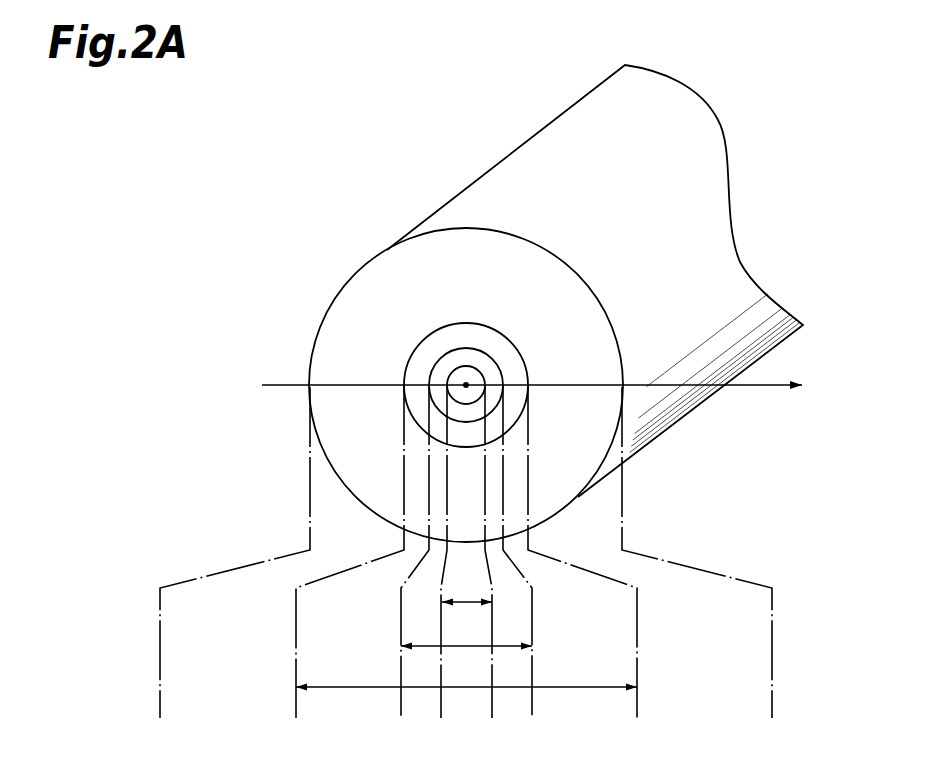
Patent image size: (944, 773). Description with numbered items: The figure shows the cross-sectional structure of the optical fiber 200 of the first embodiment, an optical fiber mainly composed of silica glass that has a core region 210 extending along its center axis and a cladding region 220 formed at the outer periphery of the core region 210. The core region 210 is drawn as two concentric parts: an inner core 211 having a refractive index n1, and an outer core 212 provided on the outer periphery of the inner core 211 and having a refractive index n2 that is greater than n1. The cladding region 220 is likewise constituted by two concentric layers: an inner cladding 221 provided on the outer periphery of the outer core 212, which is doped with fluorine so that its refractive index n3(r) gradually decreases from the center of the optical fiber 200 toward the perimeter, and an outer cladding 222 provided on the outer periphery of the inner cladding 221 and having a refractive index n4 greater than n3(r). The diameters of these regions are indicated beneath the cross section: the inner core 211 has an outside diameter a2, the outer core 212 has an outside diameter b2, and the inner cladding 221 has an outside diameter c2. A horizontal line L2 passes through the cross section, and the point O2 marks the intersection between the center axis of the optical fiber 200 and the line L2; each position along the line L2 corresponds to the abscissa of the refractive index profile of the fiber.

The optical fiber 200 is at (667, 112).
The core region 210 is at (341, 314).
The inner core 211 is at (460, 375).
The outer core 212 is at (463, 355).
The cladding region 220 is at (386, 385).
The inner cladding 221 is at (437, 422).
The outer cladding 222 is at (363, 455).
The intersection point O2 is at (466, 385).
The line L2 is at (549, 382).
The outside diameter of the inner core a2 is at (467, 619).
The outside diameter of the outer core b2 is at (466, 661).
The outside diameter of the inner cladding c2 is at (466, 702).